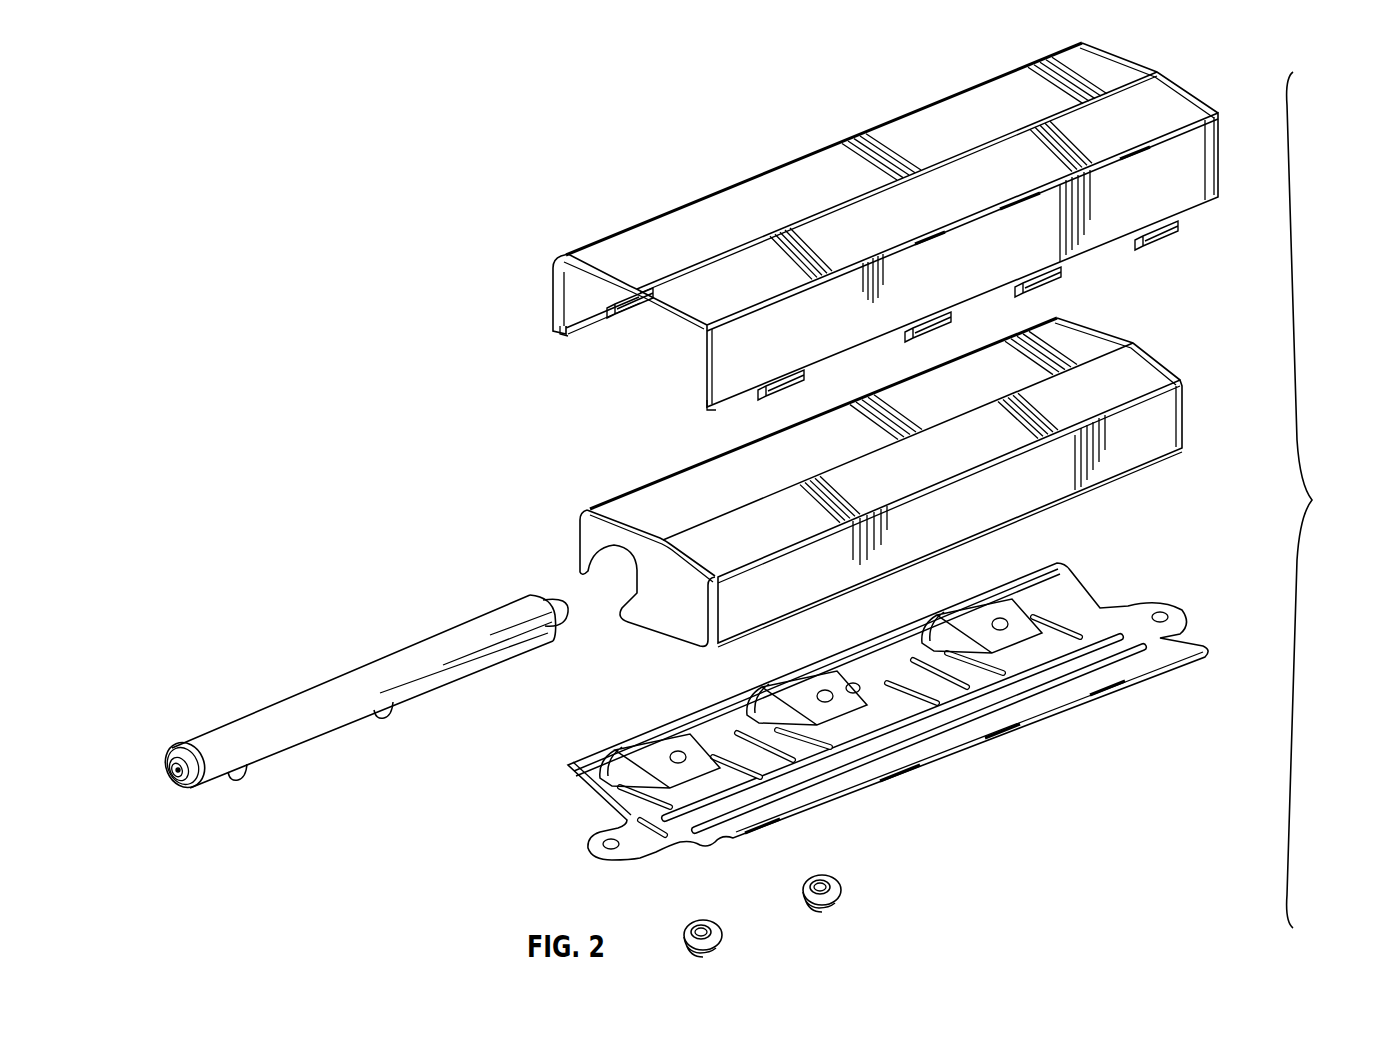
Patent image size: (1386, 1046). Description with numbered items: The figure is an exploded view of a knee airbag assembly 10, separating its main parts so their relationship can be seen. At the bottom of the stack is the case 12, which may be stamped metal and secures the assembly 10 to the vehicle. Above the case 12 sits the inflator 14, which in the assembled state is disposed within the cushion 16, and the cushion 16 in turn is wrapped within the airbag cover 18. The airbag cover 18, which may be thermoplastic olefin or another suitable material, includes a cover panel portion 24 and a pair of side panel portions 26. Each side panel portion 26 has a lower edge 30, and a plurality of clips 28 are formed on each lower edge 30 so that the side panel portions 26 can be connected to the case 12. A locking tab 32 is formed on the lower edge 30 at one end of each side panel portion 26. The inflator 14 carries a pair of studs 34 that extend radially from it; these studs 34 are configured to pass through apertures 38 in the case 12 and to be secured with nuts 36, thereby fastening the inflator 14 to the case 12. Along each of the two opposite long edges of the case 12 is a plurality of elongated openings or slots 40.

The knee airbag assembly 10 is at (1315, 500).
The case 12 is at (871, 720).
The inflator 14 is at (364, 723).
The cushion 16 is at (620, 497).
The airbag cover 18 is at (880, 245).
The cover panel portion 24 is at (836, 168).
The side panel portions 26 is at (548, 290).
The clips 28 is at (630, 320).
The lower edge 30 is at (842, 352).
The locking tab 32 is at (568, 333).
The studs 34 is at (240, 782).
The nuts 36 is at (727, 935).
The apertures 38 is at (678, 750).
The slots 40 is at (622, 752).